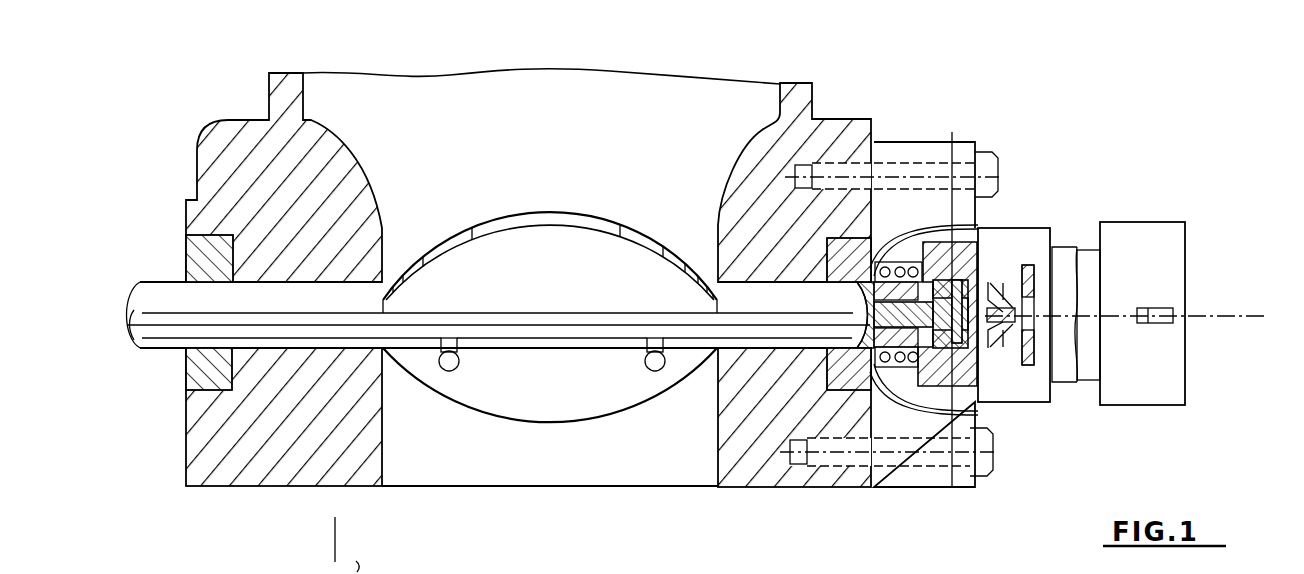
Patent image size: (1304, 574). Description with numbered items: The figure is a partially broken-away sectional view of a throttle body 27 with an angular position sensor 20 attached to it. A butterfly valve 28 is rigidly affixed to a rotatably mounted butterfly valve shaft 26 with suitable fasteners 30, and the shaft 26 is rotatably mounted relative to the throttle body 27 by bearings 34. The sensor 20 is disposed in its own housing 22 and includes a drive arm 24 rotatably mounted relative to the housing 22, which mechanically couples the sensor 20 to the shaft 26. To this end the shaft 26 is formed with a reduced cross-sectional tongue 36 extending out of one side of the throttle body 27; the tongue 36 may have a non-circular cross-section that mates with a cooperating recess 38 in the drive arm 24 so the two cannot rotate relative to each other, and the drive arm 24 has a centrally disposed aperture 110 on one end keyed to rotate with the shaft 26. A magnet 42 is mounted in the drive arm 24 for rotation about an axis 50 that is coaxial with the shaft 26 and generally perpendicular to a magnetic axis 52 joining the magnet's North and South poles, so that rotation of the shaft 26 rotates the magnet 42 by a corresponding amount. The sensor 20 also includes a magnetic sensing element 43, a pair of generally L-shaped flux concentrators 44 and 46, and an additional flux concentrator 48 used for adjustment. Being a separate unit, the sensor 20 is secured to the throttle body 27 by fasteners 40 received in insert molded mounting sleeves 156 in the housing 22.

The angular position sensor 20 is at (1078, 190).
The housing 22 is at (1033, 390).
The drive arm 24 is at (990, 240).
The butterfly valve shaft 26 is at (746, 322).
The throttle body 27 is at (868, 100).
The butterfly valve 28 is at (594, 160).
The fasteners 30 is at (447, 372).
The bearings 34 is at (190, 236).
The tongue 36 is at (910, 335).
The recess 38 is at (896, 264).
The fasteners 40 is at (1000, 142).
The magnet 42 is at (1010, 230).
The magnetic sensing element 43 is at (1058, 248).
The flux concentrator 44 is at (998, 305).
The flux concentrator 46 is at (992, 346).
The additional flux concentrator 48 is at (1025, 366).
The axis 50 is at (1240, 316).
The magnetic axis 52 is at (948, 496).
The aperture 110 is at (870, 378).
The mounting sleeves 156 is at (917, 468).